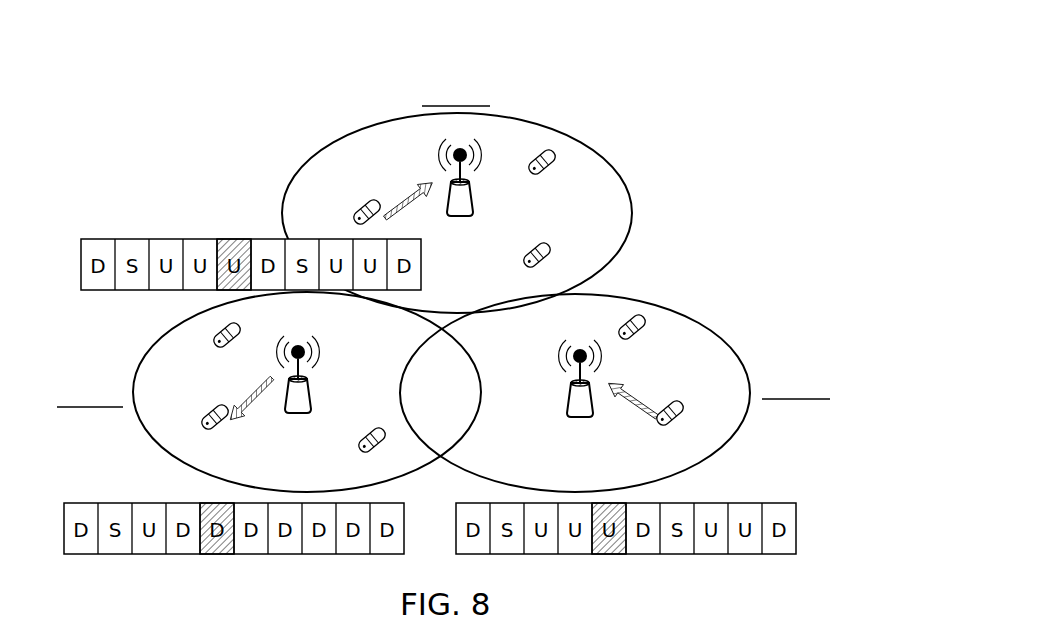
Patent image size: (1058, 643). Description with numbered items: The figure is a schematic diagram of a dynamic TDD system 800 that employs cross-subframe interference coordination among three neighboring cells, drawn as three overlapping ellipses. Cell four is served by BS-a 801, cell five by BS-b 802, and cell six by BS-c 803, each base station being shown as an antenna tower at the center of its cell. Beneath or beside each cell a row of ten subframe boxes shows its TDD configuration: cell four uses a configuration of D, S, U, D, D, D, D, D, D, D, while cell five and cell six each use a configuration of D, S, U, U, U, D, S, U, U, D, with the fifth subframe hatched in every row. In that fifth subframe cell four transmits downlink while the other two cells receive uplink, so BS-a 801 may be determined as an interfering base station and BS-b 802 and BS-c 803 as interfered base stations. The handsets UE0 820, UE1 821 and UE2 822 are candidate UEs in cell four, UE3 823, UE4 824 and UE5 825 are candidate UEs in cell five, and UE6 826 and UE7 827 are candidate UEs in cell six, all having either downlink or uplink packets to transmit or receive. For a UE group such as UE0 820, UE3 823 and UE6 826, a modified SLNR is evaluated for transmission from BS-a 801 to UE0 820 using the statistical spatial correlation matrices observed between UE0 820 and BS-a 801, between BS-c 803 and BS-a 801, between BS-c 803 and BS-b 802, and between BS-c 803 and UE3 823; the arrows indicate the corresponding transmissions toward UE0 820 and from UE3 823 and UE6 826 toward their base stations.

The dynamic TDD system 800 is at (292, 76).
The BS-a 801 is at (298, 406).
The BS-b 802 is at (467, 209).
The BS-c 803 is at (574, 409).
The UE0 820 is at (194, 422).
The UE1 821 is at (201, 333).
The UE2 822 is at (374, 412).
The UE3 823 is at (341, 204).
The UE4 824 is at (561, 250).
The UE5 825 is at (567, 148).
The UE6 826 is at (676, 442).
The UE7 827 is at (657, 318).